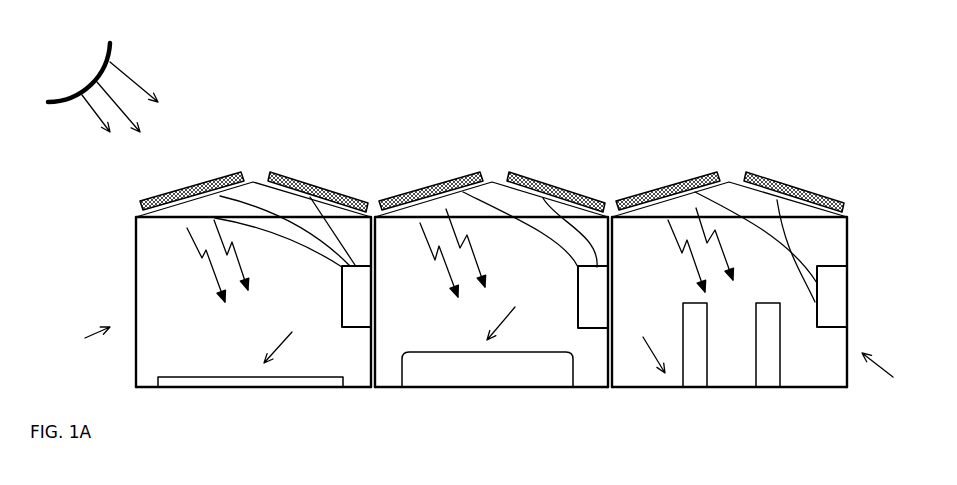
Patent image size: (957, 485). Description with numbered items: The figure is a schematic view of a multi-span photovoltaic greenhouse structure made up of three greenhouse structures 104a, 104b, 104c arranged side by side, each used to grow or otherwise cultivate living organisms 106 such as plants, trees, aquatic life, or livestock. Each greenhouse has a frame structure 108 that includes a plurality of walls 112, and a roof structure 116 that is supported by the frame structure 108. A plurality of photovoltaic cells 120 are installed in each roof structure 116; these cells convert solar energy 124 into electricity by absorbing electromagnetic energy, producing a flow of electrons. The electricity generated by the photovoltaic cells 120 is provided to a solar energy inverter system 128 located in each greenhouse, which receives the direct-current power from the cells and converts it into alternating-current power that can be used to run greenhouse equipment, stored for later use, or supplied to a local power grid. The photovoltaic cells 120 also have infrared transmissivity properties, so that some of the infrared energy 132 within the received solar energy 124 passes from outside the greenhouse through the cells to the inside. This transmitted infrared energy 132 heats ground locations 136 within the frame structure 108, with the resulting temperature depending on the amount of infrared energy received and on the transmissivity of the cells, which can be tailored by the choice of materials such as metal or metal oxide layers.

The greenhouse structure 104a is at (362, 388).
The greenhouse structure 104b is at (388, 388).
The greenhouse structure 104c is at (645, 388).
The living organisms 106 is at (163, 388).
The frame structure 108 is at (486, 361).
The walls 112 is at (135, 230).
The roof structure 116 is at (255, 182).
The photovoltaic cells 120 is at (220, 182).
The solar energy 124 is at (133, 82).
The solar energy inverter system 128 is at (360, 282).
The infrared energy 132 is at (198, 269).
The ground locations 136 is at (464, 331).